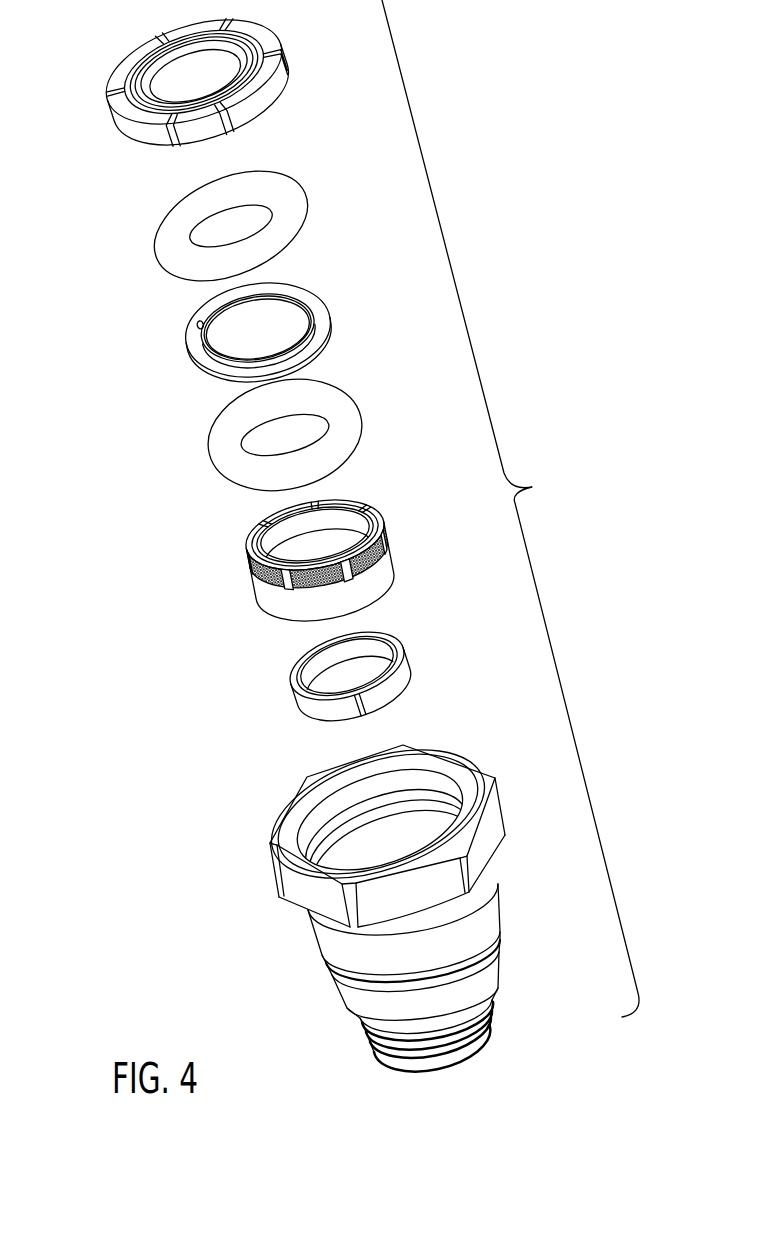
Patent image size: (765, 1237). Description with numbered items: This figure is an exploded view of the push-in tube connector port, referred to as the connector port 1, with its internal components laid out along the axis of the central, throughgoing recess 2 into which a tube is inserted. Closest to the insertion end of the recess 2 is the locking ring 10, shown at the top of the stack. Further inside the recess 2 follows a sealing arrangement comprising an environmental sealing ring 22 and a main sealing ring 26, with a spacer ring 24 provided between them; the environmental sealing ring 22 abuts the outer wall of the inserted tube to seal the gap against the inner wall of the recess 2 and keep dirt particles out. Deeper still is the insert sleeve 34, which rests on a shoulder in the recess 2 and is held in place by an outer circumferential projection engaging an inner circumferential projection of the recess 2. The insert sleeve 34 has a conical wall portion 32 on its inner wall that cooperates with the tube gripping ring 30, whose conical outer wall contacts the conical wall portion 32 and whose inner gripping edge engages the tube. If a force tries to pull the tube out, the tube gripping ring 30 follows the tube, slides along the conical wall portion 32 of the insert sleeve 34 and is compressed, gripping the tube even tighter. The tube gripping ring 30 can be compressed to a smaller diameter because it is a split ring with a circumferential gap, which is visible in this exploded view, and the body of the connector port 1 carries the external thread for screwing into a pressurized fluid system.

The connector port 1 is at (534, 835).
The central recess 2 is at (400, 826).
The locking ring 10 is at (292, 41).
The environmental sealing ring 22 is at (267, 188).
The spacer ring 24 is at (319, 294).
The main sealing ring 26 is at (340, 400).
The tube gripping ring 30 is at (397, 652).
The conical wall portion 32 is at (342, 530).
The insert sleeve 34 is at (380, 567).